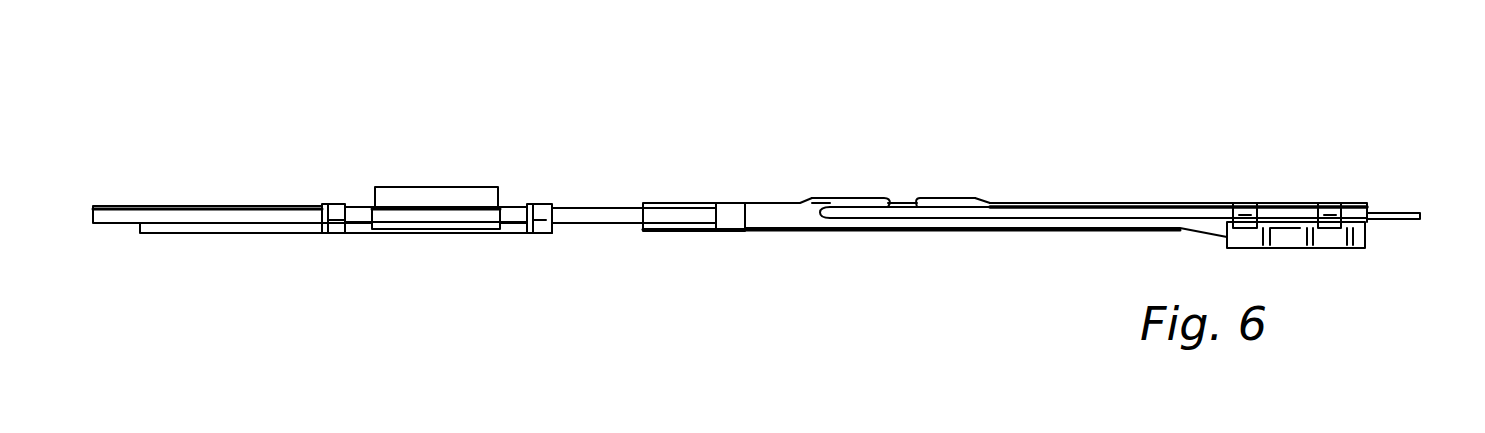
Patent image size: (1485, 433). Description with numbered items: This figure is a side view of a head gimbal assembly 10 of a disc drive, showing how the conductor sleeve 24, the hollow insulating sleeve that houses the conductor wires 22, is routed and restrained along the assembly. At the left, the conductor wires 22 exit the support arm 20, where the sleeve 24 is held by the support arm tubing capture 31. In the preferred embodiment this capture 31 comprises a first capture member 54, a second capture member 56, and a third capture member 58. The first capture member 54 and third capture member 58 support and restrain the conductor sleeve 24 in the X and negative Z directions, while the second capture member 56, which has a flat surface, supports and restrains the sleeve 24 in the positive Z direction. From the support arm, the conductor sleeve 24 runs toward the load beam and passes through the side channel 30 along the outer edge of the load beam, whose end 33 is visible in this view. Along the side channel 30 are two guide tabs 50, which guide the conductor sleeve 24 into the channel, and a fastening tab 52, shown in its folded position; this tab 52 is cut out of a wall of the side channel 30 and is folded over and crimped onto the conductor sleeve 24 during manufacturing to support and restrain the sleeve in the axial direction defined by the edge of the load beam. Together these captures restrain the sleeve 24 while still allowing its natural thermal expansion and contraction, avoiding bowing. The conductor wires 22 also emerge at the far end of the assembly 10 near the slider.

The head gimbal assembly 10 is at (630, 201).
The support arm 20 is at (253, 235).
The conductor wires 22 is at (1368, 212).
The conductor sleeve 24 is at (582, 227).
The side channel 30 is at (774, 208).
The support arm tubing capture 31 is at (520, 203).
The end of load beam 33 is at (390, 196).
The guide tabs 50 is at (934, 200).
The fastening tab 52 is at (725, 213).
The first capture member 54 is at (538, 233).
The second capture member 56 is at (413, 229).
The third capture member 58 is at (329, 204).